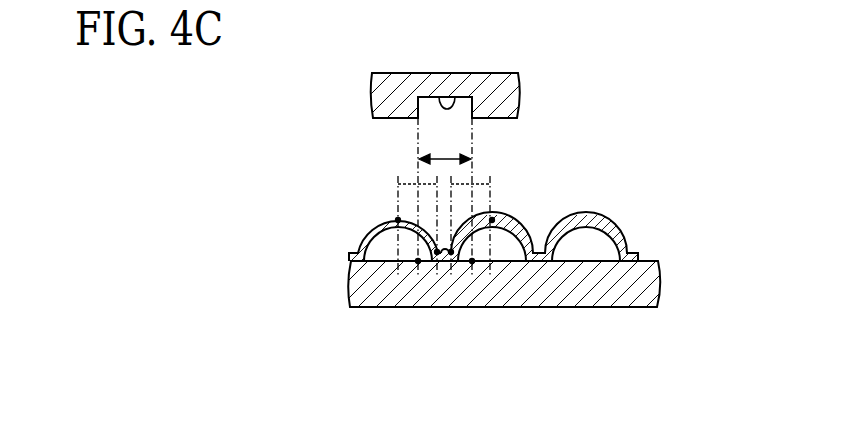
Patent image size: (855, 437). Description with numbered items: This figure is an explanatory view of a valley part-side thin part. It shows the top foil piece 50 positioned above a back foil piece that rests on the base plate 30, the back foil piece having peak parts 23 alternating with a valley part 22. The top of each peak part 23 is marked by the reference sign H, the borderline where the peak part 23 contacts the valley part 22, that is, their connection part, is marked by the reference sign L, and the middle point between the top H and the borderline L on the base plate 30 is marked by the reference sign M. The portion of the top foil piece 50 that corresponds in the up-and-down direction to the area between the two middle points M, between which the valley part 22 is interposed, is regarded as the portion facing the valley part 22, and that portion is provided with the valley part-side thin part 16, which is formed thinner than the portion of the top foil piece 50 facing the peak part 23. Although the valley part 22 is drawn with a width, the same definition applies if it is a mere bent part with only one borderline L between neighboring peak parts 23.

The top foil piece 50 is at (400, 82).
The valley part-side thin part 16 is at (447, 100).
The peak part 23 is at (372, 233).
The valley part 22 is at (445, 256).
The base plate 30 is at (560, 285).
The top of the peak part H is at (398, 220).
The borderline L is at (437, 253).
The middle point M is at (418, 262).